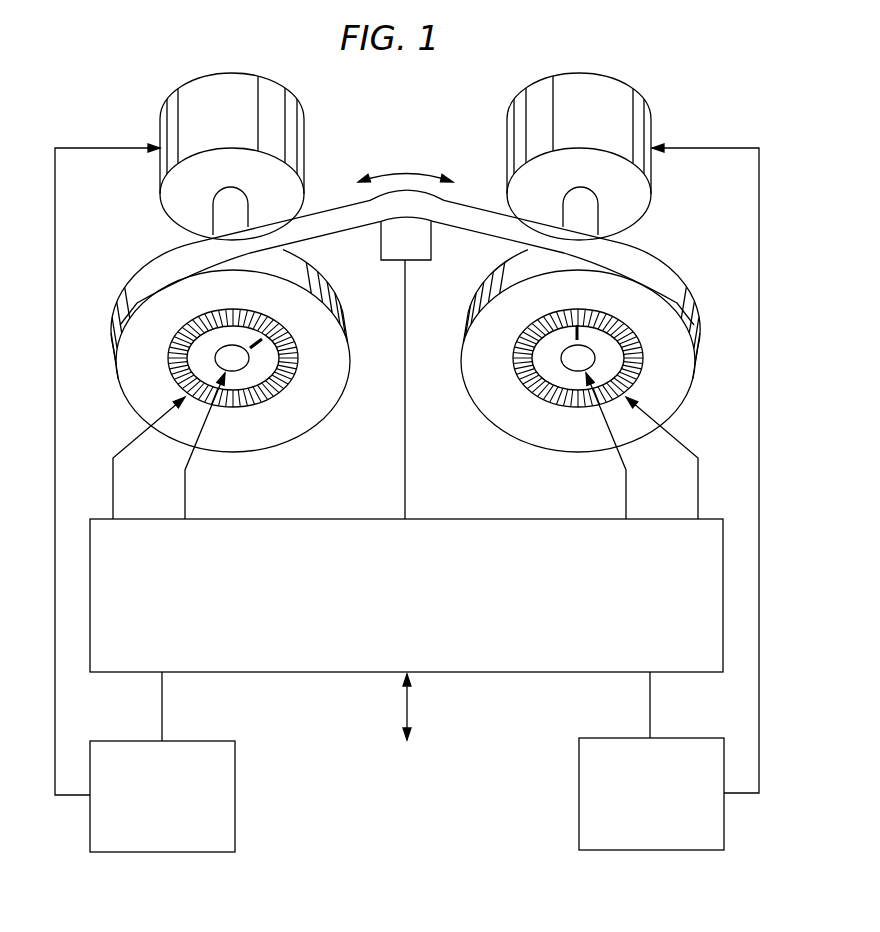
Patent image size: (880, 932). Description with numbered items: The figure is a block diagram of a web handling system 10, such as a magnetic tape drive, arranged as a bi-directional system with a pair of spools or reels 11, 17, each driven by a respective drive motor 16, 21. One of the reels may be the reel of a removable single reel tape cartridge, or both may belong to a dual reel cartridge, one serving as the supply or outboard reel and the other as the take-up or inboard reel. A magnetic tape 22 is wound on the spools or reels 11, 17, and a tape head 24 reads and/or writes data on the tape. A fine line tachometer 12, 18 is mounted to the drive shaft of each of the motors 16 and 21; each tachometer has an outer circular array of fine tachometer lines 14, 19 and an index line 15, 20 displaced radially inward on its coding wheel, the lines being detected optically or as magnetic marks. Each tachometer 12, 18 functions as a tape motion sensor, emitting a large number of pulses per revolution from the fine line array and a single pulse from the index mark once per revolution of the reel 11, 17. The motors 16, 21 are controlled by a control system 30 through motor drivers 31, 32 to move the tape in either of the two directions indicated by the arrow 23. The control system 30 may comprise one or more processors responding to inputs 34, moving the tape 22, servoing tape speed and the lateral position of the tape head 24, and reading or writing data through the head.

The web handling system 10 is at (722, 90).
The spool or reel 11 is at (317, 427).
The fine line tachometer 12 is at (168, 364).
The fine tachometer lines 14 is at (221, 310).
The index line 15 is at (252, 348).
The drive motor 16 is at (193, 81).
The spool or reel 17 is at (495, 425).
The fine line tachometer 18 is at (515, 362).
The fine tachometer lines 19 is at (567, 407).
The index line 20 is at (580, 332).
The drive motor 21 is at (616, 80).
The magnetic tape 22 is at (473, 233).
The arrow 23 is at (407, 170).
The tape head 24 is at (381, 240).
The control system 30 is at (393, 633).
The motor driver 31 is at (235, 795).
The motor driver 32 is at (579, 795).
The inputs 34 is at (408, 706).